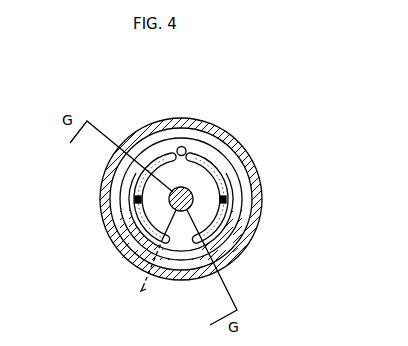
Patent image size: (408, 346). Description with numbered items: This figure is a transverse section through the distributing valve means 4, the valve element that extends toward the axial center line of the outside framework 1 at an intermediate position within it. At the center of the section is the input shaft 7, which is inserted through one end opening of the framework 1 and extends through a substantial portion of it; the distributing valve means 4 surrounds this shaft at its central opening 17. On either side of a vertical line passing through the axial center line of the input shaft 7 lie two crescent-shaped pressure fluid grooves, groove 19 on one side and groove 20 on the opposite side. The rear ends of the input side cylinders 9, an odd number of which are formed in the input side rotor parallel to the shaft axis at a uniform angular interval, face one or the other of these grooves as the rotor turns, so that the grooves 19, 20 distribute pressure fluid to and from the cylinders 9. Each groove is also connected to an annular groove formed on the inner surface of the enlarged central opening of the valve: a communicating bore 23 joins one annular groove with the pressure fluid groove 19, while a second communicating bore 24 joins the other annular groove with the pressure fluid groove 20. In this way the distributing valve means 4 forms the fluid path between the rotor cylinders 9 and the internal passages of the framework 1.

The outside framework 1 is at (172, 118).
The distributing valve means 4 is at (194, 133).
The input shaft 7 is at (134, 250).
The input side cylinders 9 is at (162, 243).
The central opening 17 is at (238, 248).
The crescent-shaped pressure fluid groove 19 is at (133, 197).
The crescent-shaped pressure fluid groove 20 is at (240, 156).
The communicating bore 23 is at (111, 218).
The communicating bore 24 is at (229, 197).